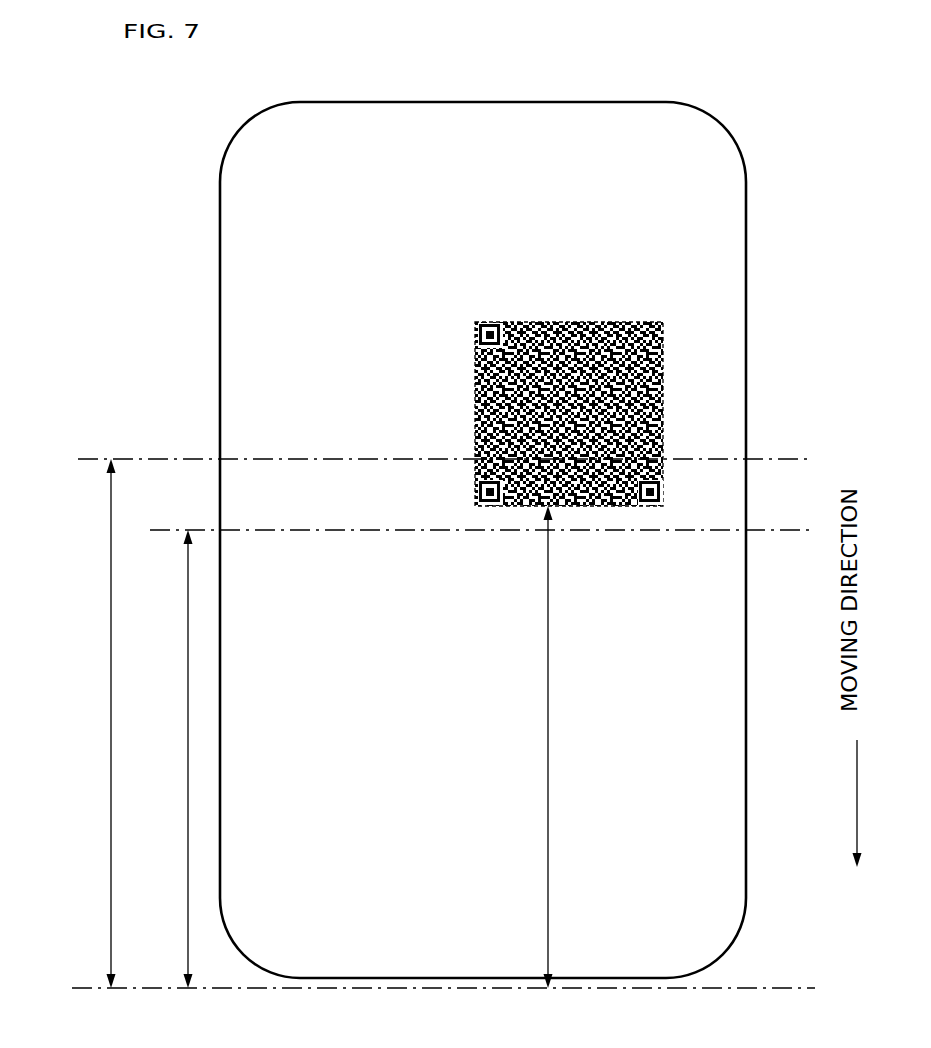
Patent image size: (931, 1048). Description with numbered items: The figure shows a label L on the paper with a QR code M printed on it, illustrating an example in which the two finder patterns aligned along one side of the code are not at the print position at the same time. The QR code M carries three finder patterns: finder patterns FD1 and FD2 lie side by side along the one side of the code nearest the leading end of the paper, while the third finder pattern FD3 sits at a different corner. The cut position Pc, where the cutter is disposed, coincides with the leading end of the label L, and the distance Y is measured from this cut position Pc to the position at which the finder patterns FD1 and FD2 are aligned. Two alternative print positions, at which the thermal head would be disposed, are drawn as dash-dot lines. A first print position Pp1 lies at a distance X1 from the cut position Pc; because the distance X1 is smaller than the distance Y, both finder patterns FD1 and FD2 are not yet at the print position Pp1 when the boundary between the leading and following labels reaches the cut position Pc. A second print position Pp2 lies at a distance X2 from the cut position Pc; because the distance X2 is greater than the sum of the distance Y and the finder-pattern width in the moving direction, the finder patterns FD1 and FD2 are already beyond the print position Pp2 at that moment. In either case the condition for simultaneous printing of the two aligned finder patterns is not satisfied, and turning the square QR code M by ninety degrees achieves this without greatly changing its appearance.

The label L is at (480, 123).
The QR code M is at (663, 351).
The finder pattern FD1 is at (653, 506).
The finder pattern FD2 is at (488, 506).
The finder pattern FD3 is at (490, 322).
The print position Pp2 is at (423, 462).
The print position Pp1 is at (466, 535).
The cut position Pc is at (428, 982).
The distance X2 is at (91, 723).
The distance X1 is at (169, 759).
The distance Y is at (530, 747).